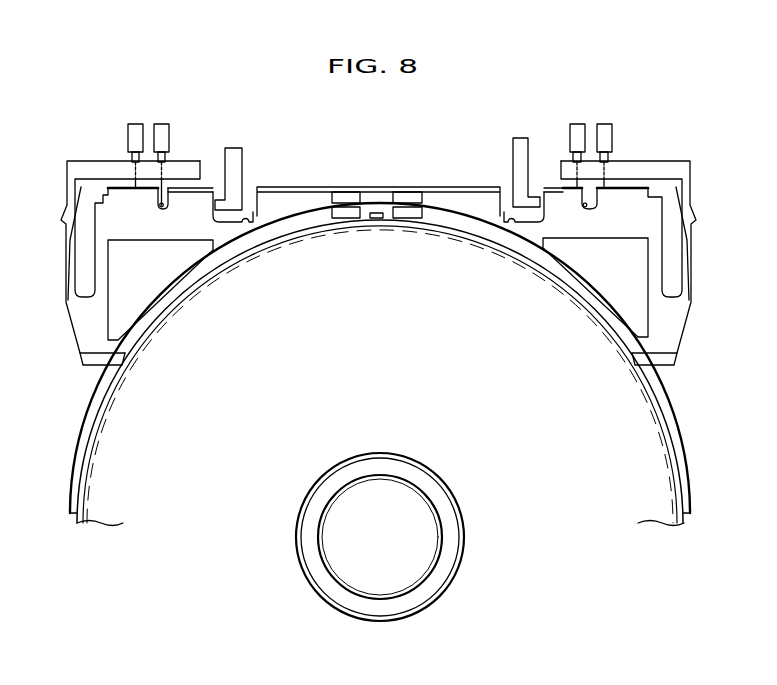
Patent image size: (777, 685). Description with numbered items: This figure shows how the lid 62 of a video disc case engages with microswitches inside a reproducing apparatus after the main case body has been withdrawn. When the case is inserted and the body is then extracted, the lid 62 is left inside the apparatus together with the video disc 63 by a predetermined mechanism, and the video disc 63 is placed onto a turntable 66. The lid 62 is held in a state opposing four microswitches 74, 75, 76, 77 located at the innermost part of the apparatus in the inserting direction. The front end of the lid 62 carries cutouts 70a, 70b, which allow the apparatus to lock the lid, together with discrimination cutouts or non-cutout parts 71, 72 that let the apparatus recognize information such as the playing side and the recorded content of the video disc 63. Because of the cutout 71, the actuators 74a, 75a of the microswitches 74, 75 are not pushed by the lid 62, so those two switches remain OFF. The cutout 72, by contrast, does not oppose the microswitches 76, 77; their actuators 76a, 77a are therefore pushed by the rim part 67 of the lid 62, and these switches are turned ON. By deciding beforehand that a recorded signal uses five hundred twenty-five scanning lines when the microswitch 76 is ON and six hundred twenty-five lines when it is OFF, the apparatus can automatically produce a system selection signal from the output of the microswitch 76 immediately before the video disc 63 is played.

The lid 62 is at (427, 187).
The video disc 63 is at (130, 416).
The turntable 66 is at (673, 440).
The rim part 67 is at (315, 187).
The cutout 70a is at (510, 219).
The cutout 70b is at (246, 221).
The cutout 71 is at (163, 212).
The cutout 72 is at (588, 210).
The microswitch 74 is at (137, 124).
The microswitch 75 is at (160, 124).
The microswitch 76 is at (577, 124).
The microswitch 77 is at (603, 124).
The actuator 74a is at (130, 190).
The actuator 75a is at (164, 194).
The actuator 76a is at (572, 190).
The actuator 77a is at (615, 189).